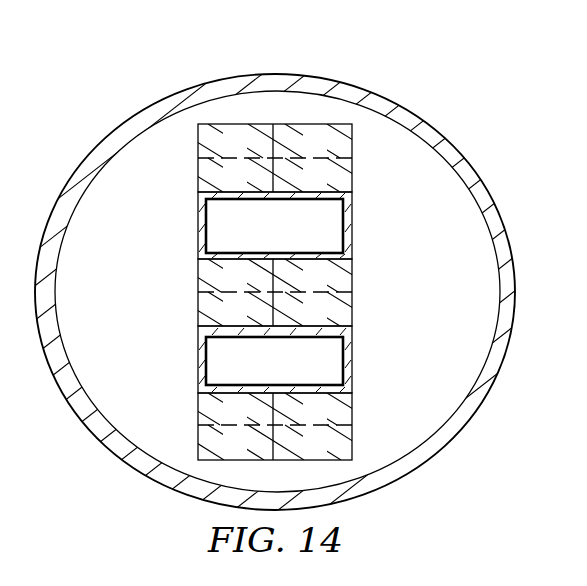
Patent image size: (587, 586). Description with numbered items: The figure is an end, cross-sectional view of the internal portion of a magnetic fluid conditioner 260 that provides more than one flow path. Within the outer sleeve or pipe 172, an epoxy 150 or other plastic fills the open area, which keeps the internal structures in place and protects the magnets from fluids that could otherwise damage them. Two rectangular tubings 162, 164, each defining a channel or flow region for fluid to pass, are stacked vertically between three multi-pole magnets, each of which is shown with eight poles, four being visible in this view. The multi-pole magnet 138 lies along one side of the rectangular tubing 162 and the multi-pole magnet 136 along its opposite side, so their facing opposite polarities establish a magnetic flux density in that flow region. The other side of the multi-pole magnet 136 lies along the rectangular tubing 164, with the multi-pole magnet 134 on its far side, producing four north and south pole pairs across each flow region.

The magnetic fluid conditioner 260 is at (399, 54).
The housing 172 is at (188, 95).
The epoxy 150 is at (269, 105).
The multi-pole magnet 138 is at (369, 154).
The multi-pole magnet 136 is at (369, 294).
The multi-pole magnet 134 is at (368, 429).
The rectangular tubing 162 is at (198, 229).
The rectangular tubing 164 is at (198, 372).